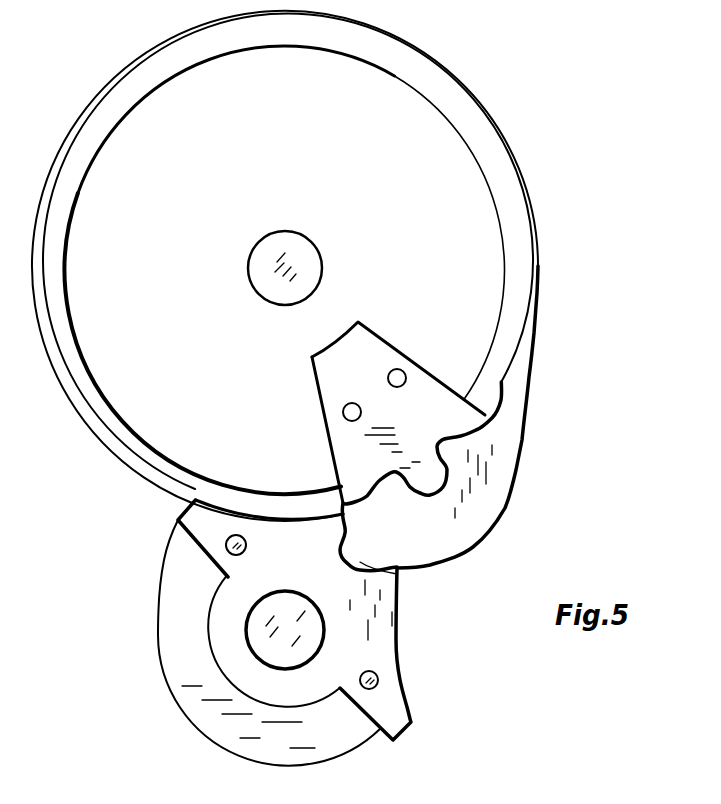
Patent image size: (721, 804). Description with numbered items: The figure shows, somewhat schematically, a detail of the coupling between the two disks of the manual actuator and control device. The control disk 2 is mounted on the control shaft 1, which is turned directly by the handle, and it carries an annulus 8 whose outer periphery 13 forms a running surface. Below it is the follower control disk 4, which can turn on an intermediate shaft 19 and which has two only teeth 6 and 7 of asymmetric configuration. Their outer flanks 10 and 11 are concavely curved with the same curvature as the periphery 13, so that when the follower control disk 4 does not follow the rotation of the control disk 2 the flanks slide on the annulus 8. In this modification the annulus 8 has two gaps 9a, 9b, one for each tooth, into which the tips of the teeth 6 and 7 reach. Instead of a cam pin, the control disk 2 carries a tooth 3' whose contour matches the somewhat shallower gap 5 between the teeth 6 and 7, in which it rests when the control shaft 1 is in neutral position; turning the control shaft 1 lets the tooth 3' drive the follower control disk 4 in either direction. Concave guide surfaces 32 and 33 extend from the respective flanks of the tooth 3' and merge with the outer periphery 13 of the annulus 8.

The control shaft 1 is at (297, 257).
The control disk 2 is at (413, 53).
The tooth 3' is at (423, 443).
The follower control disk 4 is at (332, 742).
The recess or gap 5 is at (397, 575).
The tooth 6 is at (360, 592).
The tooth 7 is at (337, 535).
The annulus 8 is at (470, 128).
The gap 9a is at (392, 478).
The gap 9b is at (440, 440).
The outer flank 10 is at (396, 653).
The outer flank 11 is at (283, 517).
The periphery 13 is at (505, 162).
The intermediate shaft 19 is at (293, 628).
The concave guide surface 32 is at (367, 503).
The concave guide surface 33 is at (467, 425).